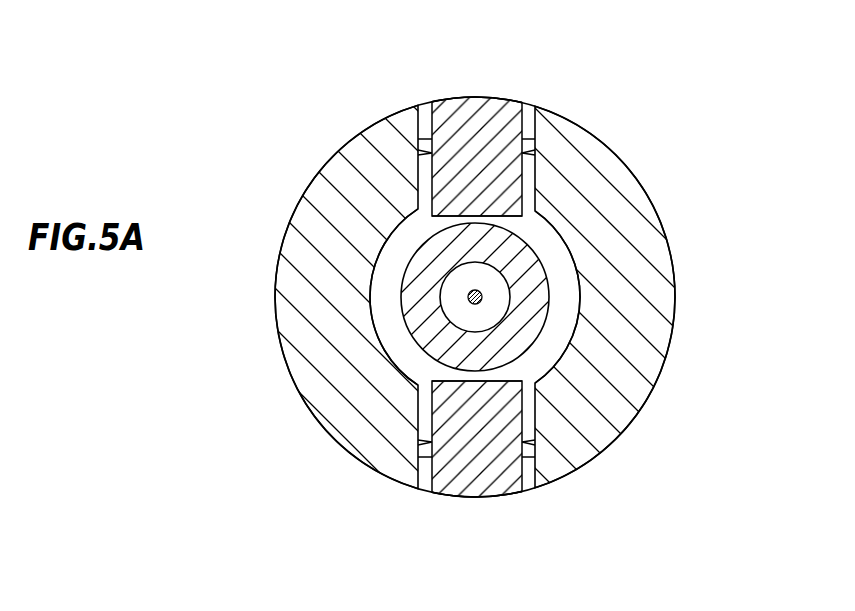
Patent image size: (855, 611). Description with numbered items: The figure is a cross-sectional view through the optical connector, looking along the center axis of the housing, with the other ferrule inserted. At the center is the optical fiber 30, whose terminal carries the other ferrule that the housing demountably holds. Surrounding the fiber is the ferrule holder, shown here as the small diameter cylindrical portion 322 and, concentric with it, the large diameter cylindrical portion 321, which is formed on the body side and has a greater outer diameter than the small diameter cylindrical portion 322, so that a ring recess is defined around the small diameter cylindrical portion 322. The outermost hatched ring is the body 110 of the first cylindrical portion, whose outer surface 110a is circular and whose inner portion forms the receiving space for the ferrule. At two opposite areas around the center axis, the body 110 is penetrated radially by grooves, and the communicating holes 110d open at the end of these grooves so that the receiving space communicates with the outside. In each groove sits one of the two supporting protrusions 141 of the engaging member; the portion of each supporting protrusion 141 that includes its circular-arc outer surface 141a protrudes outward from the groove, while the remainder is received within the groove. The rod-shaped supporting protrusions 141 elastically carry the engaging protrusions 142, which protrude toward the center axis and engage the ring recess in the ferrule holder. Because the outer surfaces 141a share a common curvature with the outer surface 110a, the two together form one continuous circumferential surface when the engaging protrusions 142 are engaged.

The optical fiber 30 is at (470, 295).
The body 110 is at (628, 187).
The outer surface of the first cylindrical portion 110a is at (668, 243).
The communicating hole 110d is at (530, 170).
The supporting protrusion 141 is at (503, 112).
The outer surface of the supporting protrusion 141a is at (467, 97).
The engaging protrusion 142 is at (470, 205).
The large diameter cylindrical portion 321 is at (565, 308).
The small diameter cylindrical portion 322 is at (522, 330).